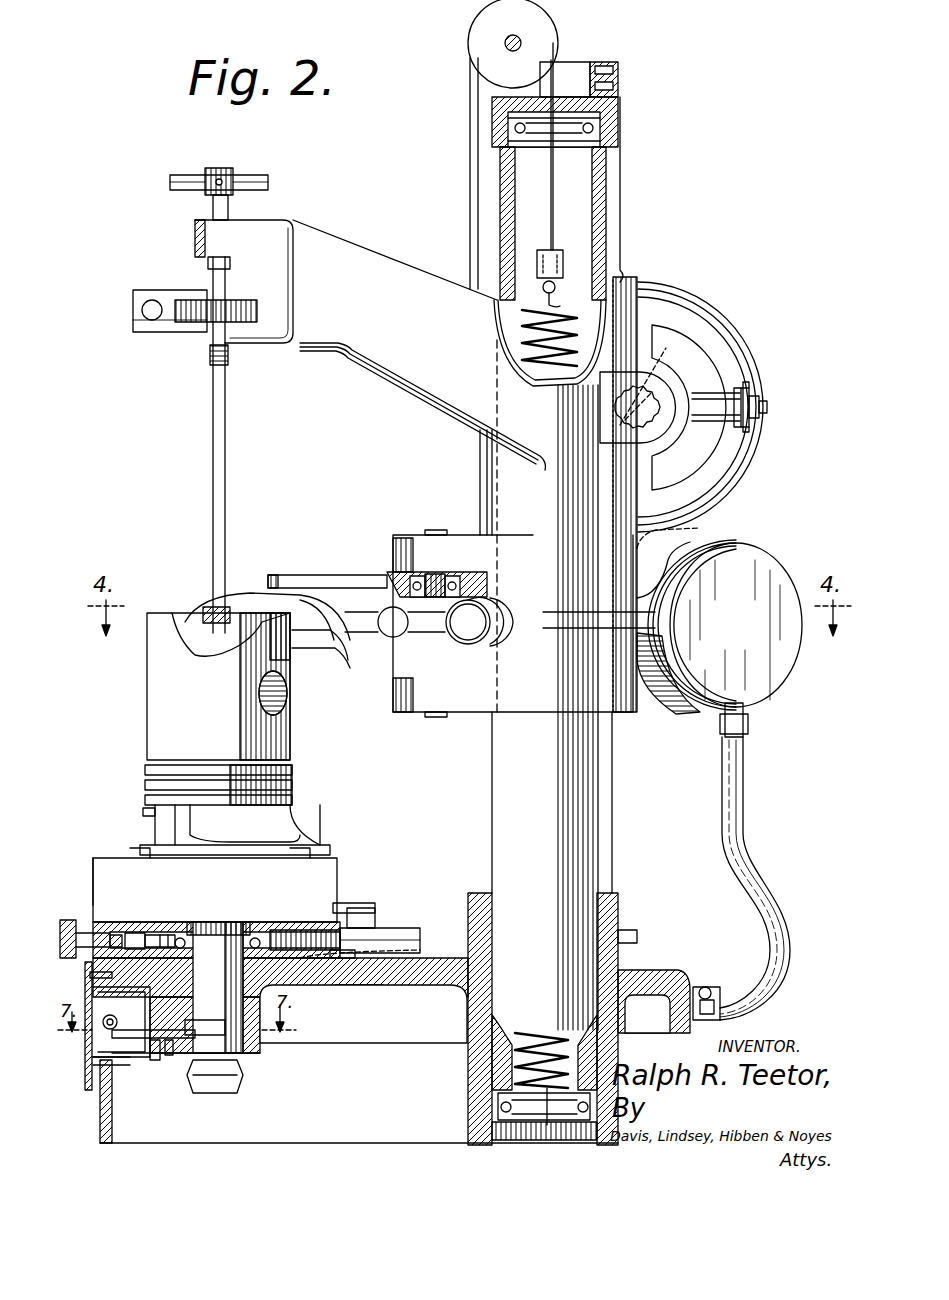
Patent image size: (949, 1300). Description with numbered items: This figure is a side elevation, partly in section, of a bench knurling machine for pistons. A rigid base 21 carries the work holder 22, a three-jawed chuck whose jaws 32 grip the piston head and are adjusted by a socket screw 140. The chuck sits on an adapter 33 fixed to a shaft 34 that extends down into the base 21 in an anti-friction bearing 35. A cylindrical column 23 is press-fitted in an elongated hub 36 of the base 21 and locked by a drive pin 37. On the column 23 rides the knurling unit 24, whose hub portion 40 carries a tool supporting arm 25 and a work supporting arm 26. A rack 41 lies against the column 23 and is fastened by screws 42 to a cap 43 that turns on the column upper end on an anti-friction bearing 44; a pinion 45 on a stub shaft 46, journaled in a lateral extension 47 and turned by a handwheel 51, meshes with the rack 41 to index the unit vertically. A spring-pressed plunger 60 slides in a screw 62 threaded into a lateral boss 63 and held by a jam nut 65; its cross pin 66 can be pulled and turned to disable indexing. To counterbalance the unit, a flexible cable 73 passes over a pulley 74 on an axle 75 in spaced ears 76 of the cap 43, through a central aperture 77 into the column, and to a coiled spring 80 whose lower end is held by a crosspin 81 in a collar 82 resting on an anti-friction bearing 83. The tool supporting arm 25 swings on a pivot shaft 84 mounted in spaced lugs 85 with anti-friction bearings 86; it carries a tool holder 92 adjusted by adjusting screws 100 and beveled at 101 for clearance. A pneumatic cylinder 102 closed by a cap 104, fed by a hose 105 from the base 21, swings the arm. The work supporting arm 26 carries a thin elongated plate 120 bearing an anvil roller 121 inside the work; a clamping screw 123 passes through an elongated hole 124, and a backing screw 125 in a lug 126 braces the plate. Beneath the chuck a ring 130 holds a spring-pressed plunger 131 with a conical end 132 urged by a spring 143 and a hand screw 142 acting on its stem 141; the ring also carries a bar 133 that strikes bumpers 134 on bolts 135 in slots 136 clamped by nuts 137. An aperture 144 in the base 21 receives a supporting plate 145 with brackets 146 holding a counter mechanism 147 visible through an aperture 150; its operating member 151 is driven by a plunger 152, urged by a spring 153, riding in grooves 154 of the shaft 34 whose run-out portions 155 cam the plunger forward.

The base 21 is at (100, 1140).
The work holder 22 is at (340, 876).
The column 23 is at (515, 768).
The knurling unit 24 is at (476, 462).
The tool supporting arm 25 is at (318, 575).
The work supporting arm 26 is at (380, 372).
The jaws 32 is at (158, 812).
The adapter 33 is at (280, 935).
The shaft 34 is at (212, 943).
The anti-friction bearing 35 is at (256, 936).
The hub 36 is at (468, 1072).
The drive pin 37 is at (637, 937).
The hub portion 40 is at (525, 690).
The rack 41 is at (622, 258).
The screws 42 is at (614, 70).
The cap 43 is at (492, 112).
The anti-friction bearing 44 is at (605, 128).
The pinion 45 is at (647, 379).
The stub shaft 46 is at (660, 392).
The lateral extension 47 is at (686, 448).
The handwheel 51 is at (728, 335).
The plunger 60 is at (762, 400).
The screw 62 is at (745, 385).
The lateral boss 63 is at (712, 410).
The jam nut 65 is at (742, 425).
The cross pin 66 is at (750, 420).
The flexible cable 73 is at (470, 178).
The pulley 74 is at (470, 30).
The axle 75 is at (505, 45).
The spaced ears 76 is at (540, 96).
The central aperture 77 is at (562, 100).
The coiled spring 80 is at (552, 320).
The crosspin 81 is at (545, 1128).
The collar 82 is at (492, 1131).
The anti-friction bearing 83 is at (498, 1107).
The pivot shaft 84 is at (432, 572).
The spaced lugs 85 is at (395, 548).
The anti-friction bearings 86 is at (458, 570).
The tool holder 92 is at (243, 600).
The adjusting screws 100 is at (390, 632).
The bevel 101 is at (278, 600).
The cylinder 102 is at (700, 528).
The cap 104 is at (770, 678).
The hose 105 is at (743, 795).
The elongated plate 120 is at (226, 434).
The anvil roller 121 is at (203, 615).
The clamping screw 123 is at (172, 325).
The elongated hole 124 is at (220, 306).
The backing screw 125 is at (213, 203).
The lug 126 is at (195, 238).
The ring 130 is at (310, 925).
The spring-pressed plunger 131 is at (160, 935).
The conical end 132 is at (195, 908).
The bar 133 is at (412, 932).
The bumpers 134 is at (375, 928).
The bolt 135 is at (360, 1000).
The slot 136 is at (379, 951).
The nut 137 is at (362, 922).
The socket screw 140 is at (125, 855).
The stem 141 is at (117, 935).
The hand screw 142 is at (80, 920).
The spring 143 is at (135, 933).
The aperture 144 is at (115, 1070).
The supporting plate 145 is at (88, 1080).
The brackets 146 is at (130, 1000).
The counter mechanism 147 is at (125, 1045).
The aperture 150 is at (108, 1015).
The operating member 151 is at (85, 971).
The plunger 152 is at (170, 1058).
The spring 153 is at (160, 1060).
The grooves 154 is at (225, 1060).
The run-out portions 155 is at (218, 1025).